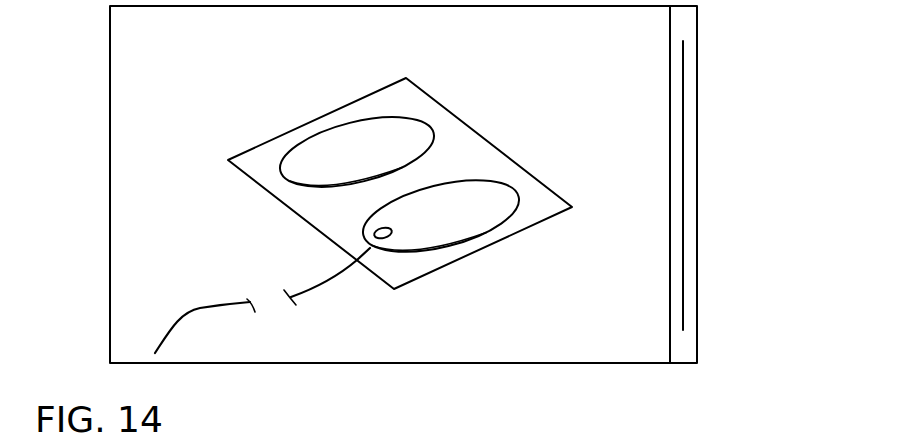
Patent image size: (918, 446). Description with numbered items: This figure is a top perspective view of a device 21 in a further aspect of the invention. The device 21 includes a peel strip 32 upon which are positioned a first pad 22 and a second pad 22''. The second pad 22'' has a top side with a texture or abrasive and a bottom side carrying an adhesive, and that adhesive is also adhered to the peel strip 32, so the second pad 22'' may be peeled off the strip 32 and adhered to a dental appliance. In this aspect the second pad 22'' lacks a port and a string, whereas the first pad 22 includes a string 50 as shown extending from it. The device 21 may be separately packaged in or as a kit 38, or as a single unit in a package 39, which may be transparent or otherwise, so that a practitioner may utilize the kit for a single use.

The device 21 is at (555, 128).
The first pad 22 is at (446, 242).
The second pad 22'' is at (405, 128).
The peel strip 32 is at (260, 155).
The kit 38 is at (740, 117).
The package 39 is at (643, 217).
The string 50 is at (192, 310).